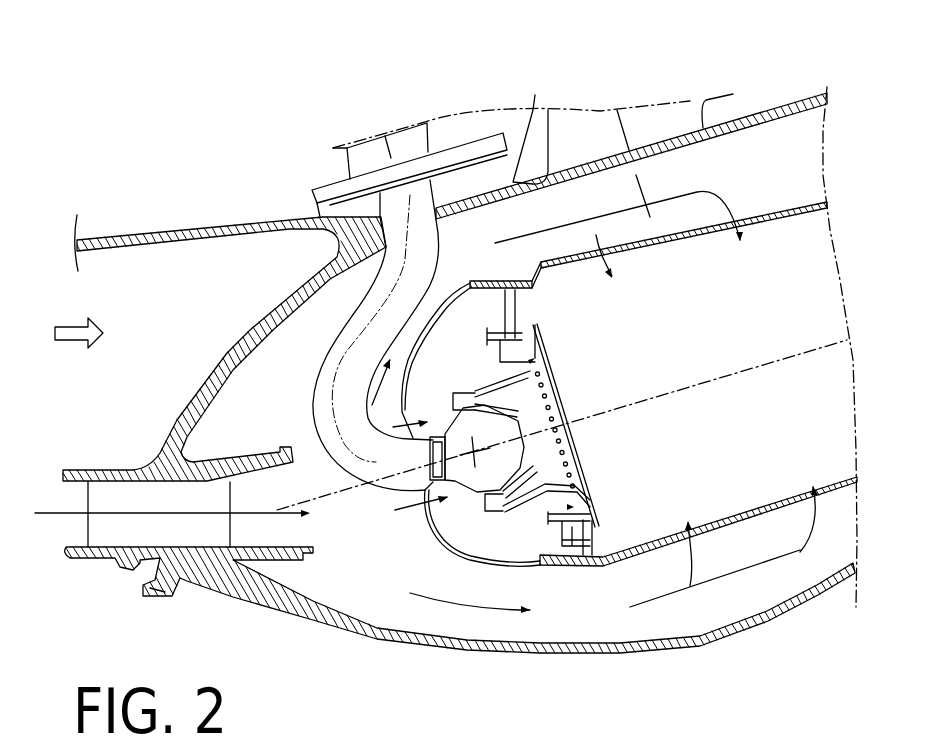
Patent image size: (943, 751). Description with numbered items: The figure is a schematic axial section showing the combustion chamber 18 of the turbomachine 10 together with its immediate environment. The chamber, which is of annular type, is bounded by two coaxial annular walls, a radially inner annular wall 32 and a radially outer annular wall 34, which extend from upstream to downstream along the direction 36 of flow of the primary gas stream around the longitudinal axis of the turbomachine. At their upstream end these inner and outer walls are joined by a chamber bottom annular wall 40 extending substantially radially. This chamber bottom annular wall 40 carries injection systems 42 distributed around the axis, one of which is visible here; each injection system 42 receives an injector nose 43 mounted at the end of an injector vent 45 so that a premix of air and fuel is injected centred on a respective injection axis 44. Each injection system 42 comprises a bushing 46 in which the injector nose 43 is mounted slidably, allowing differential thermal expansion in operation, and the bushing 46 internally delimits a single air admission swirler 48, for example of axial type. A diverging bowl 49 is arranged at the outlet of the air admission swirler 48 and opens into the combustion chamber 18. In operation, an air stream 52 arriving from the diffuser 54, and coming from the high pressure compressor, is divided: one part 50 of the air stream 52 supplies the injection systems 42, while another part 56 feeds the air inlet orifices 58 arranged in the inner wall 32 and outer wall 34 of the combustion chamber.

The turbomachine 10 is at (614, 78).
The combustion chamber 18 is at (767, 190).
The radially inner annular wall 32 is at (760, 513).
The radially outer annular wall 34 is at (670, 245).
The direction of flow of the primary gas stream 36 is at (72, 333).
The chamber bottom annular wall 40 is at (520, 318).
The injection system 42 is at (527, 505).
The injector nose 43 is at (473, 492).
The injection axis 44 is at (850, 340).
The injector vent 45 is at (400, 490).
The bushing 46 is at (503, 405).
The air admission swirler 48 is at (460, 392).
The diverging bowl 49 is at (573, 470).
The part of air stream 50 is at (435, 500).
The air stream 52 is at (53, 507).
The diffuser 54 is at (117, 567).
The another part of air stream 56 is at (592, 208).
The air inlet orifices 58 is at (622, 268).